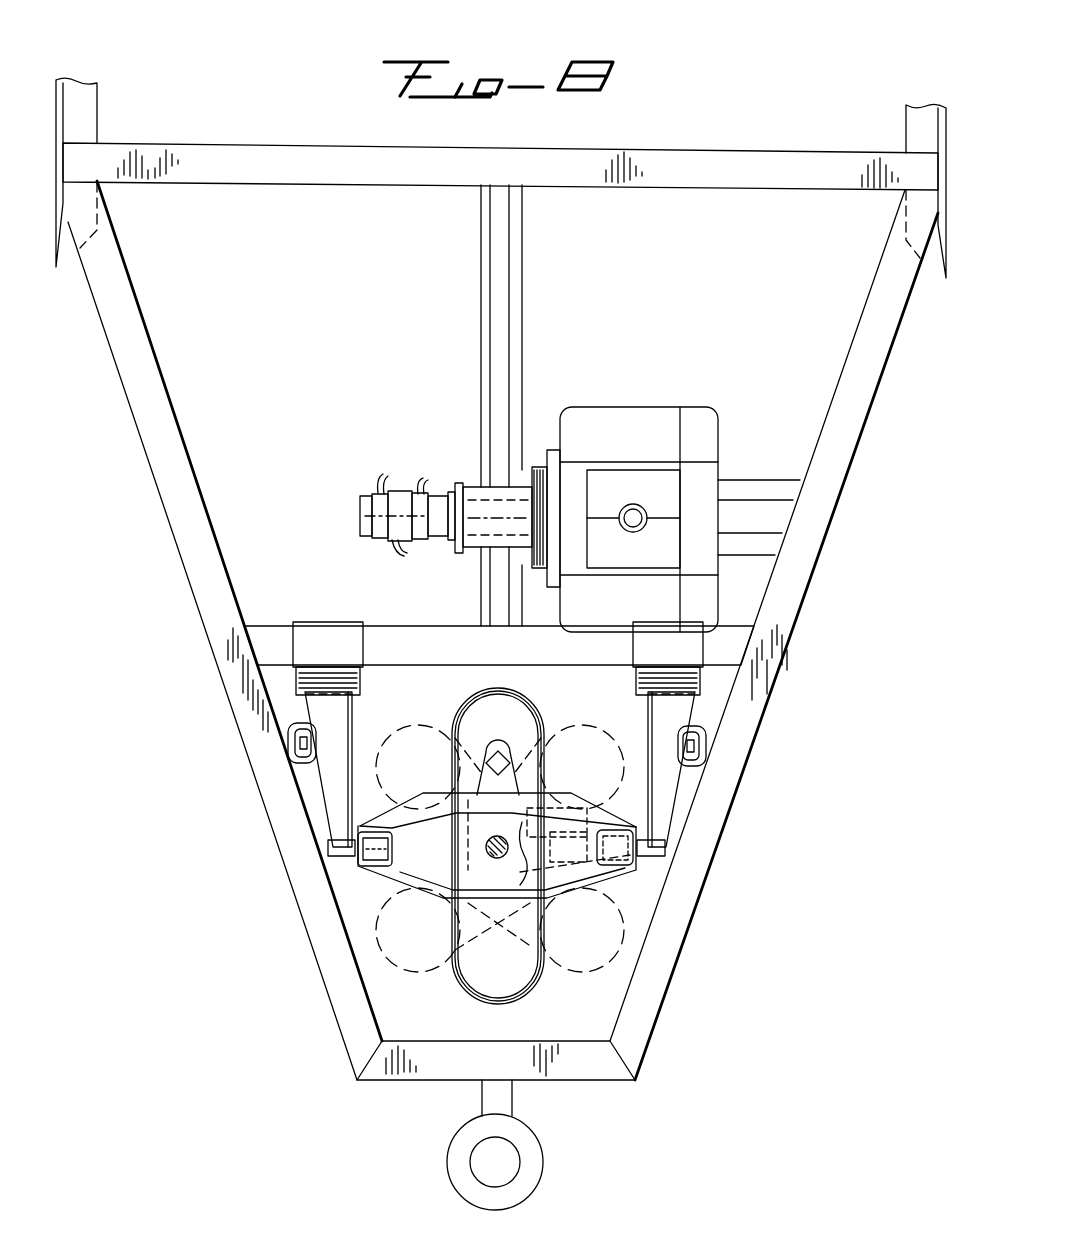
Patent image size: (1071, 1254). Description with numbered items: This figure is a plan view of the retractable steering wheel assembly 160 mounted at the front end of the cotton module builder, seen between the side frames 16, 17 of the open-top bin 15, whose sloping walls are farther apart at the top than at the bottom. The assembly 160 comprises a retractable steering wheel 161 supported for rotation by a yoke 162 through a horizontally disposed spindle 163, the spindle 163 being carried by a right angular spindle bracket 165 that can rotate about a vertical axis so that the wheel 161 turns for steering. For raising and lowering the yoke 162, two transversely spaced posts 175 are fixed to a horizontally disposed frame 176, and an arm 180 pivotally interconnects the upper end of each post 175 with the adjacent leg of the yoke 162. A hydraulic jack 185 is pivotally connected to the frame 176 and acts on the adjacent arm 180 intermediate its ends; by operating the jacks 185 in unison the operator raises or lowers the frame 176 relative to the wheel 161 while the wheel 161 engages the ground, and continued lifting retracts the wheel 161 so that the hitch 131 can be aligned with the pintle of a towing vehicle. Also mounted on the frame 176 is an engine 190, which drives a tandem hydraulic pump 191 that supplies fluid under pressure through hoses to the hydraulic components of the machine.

The bin 15 is at (231, 126).
The side frame 16 is at (54, 77).
The side frame 17 is at (957, 100).
The hitch 131 is at (462, 1143).
The retractable steering wheel assembly 160 is at (750, 826).
The retractable steering wheel 161 is at (478, 990).
The yoke 162 is at (358, 870).
The spindle 163 is at (486, 847).
The right angular spindle bracket 165 is at (588, 826).
The post 175 is at (363, 683).
The frame 176 is at (236, 695).
The arm 180 is at (353, 708).
The hydraulic jack 185 is at (288, 751).
The engine 190 is at (708, 441).
The tandem hydraulic pump 191 is at (478, 482).